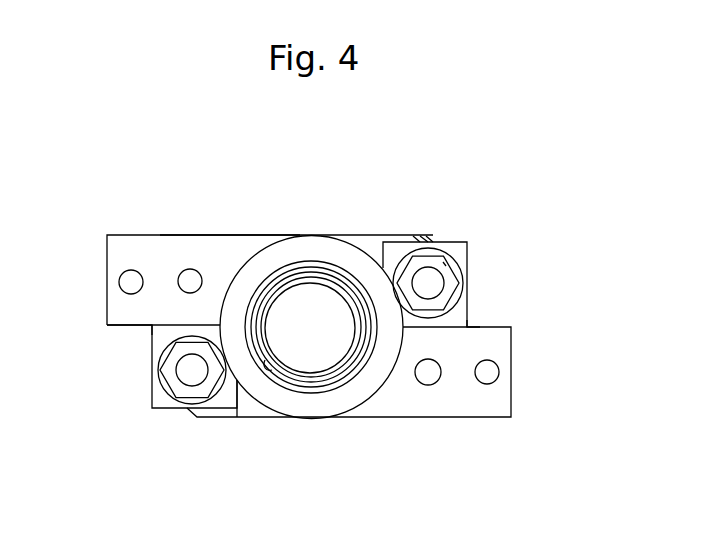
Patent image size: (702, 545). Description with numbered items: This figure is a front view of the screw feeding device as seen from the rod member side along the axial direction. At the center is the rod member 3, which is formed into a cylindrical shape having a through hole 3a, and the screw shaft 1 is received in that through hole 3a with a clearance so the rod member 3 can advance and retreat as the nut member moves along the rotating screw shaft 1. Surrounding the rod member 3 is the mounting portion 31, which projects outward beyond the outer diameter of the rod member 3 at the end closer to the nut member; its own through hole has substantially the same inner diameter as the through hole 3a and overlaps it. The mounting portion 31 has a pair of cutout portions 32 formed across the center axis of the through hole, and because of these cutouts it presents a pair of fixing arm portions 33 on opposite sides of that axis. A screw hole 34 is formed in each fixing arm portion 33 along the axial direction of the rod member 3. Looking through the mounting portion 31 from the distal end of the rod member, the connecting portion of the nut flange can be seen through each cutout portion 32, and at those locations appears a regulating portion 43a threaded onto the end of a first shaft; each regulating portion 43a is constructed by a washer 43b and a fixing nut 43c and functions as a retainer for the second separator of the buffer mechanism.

The screw shaft 1 is at (318, 292).
The rod member 3 is at (314, 419).
The through hole 3a is at (270, 368).
The mounting portion 31 is at (232, 235).
The cutout portion 32 is at (137, 328).
The fixing arm portion 33 is at (120, 256).
The screw hole 34 is at (190, 280).
The regulating portion 43a is at (182, 390).
The washer 43b is at (422, 243).
The fixing nut 43c is at (442, 265).